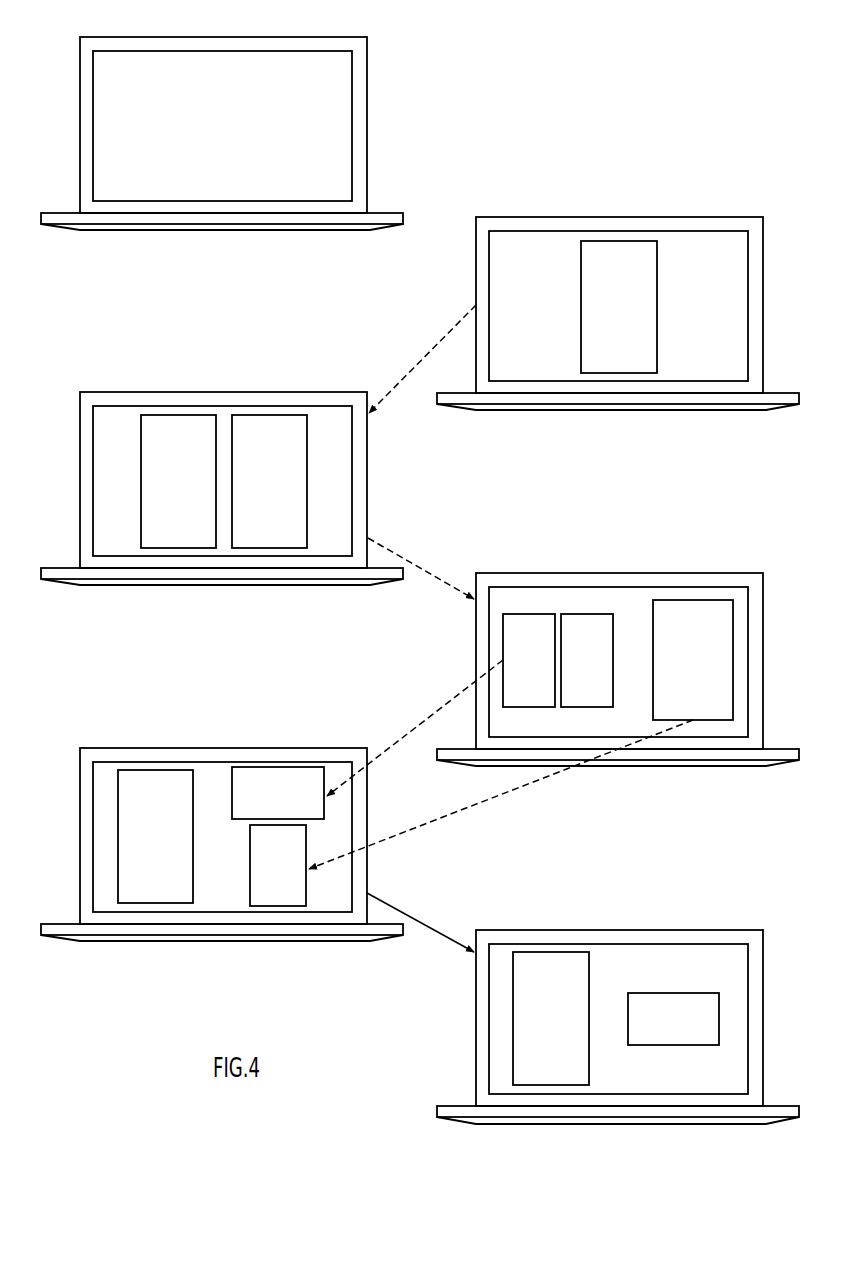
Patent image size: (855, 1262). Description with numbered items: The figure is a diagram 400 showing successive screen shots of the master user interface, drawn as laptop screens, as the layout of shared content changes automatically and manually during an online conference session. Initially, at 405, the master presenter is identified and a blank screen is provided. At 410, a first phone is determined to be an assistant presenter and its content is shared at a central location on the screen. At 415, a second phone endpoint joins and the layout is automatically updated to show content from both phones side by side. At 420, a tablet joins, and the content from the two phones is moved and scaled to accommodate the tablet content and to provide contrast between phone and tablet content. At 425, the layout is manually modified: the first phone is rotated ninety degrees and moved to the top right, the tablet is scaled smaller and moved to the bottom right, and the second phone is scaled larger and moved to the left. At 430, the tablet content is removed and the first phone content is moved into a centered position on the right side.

The diagram 400 is at (600, 123).
The initial blank screen state 405 is at (131, 63).
The Phone 1 sharing state 410 is at (528, 244).
The Phone 2 added state 415 is at (122, 418).
The Tablet 1 added state 420 is at (530, 601).
The manually modified layout state 425 is at (105, 775).
The Tablet 1 removed state 430 is at (603, 947).